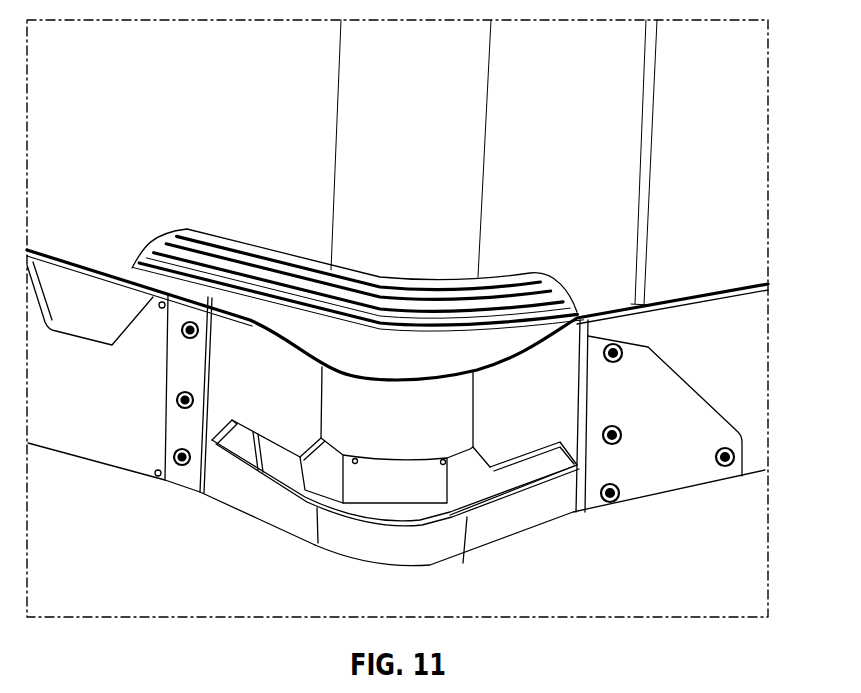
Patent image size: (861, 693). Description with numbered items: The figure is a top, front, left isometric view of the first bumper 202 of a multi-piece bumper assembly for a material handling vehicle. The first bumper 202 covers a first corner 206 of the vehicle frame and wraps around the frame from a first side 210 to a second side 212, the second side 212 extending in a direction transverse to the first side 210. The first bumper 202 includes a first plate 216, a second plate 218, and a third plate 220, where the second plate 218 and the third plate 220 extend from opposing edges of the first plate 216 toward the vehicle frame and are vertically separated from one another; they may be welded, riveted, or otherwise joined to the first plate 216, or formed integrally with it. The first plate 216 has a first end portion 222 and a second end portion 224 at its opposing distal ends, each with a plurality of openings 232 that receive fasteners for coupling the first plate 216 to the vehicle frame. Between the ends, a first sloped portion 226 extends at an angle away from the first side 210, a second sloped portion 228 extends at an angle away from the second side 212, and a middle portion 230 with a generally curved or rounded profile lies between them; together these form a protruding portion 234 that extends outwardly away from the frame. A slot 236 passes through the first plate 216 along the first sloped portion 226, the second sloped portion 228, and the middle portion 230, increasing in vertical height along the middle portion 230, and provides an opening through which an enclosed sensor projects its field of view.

The first bumper 202 is at (665, 538).
The first corner 206 is at (398, 269).
The first side 210 is at (742, 371).
The second side 212 is at (84, 317).
The first plate 216 is at (251, 496).
The second plate 218 is at (407, 367).
The third plate 220 is at (447, 530).
The first end portion 222 is at (637, 492).
The second end portion 224 is at (187, 478).
The first sloped portion 226 is at (562, 377).
The second sloped portion 228 is at (292, 523).
The middle portion 230 is at (340, 540).
The openings 232 is at (182, 404).
The protruding portion 234 is at (512, 565).
The slot 236 is at (391, 504).